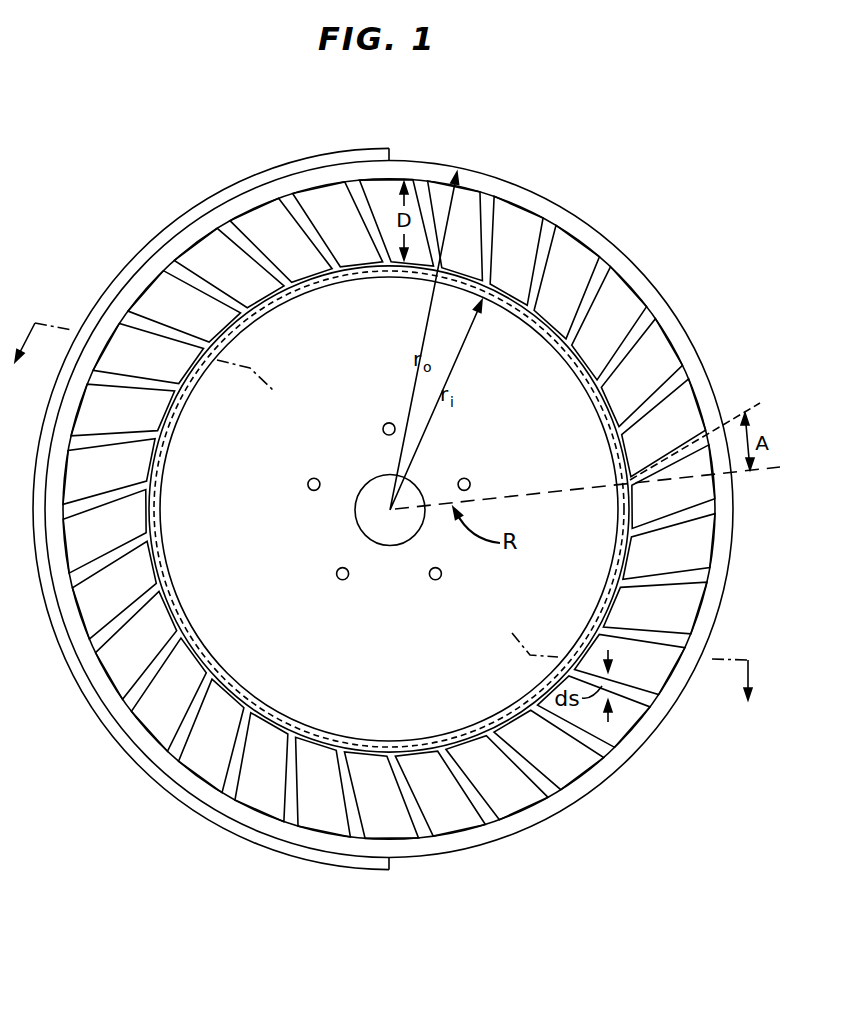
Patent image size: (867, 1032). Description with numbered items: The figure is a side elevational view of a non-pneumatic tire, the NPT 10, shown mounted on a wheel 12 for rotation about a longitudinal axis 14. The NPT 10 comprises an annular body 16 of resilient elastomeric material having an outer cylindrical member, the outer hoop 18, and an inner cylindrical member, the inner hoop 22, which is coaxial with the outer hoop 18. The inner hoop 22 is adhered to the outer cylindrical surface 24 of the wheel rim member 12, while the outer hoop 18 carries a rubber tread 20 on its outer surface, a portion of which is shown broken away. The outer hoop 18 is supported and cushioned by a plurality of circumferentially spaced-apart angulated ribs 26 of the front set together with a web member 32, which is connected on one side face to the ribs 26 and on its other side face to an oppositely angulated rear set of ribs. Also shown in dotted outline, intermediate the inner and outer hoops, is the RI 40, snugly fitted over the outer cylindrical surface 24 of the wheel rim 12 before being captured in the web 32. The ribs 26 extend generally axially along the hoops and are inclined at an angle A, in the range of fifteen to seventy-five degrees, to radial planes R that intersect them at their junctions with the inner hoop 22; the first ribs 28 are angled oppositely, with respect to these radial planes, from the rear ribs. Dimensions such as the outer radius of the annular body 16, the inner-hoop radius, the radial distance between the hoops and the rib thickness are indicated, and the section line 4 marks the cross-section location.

The NPT 10 is at (646, 247).
The wheel 12 is at (379, 645).
The axis 14 is at (388, 509).
The annular body 16 is at (660, 282).
The outer hoop 18 is at (677, 324).
The rubber tread 20 is at (128, 258).
The inner hoop 22 is at (556, 298).
The outer cylindrical surface 24 is at (586, 381).
The front set of angulated ribs 26 is at (296, 212).
The first ribs 28 is at (323, 258).
The web member 32 is at (566, 248).
The RI 40 is at (104, 308).
The section line 4- 4 is at (381, 526).